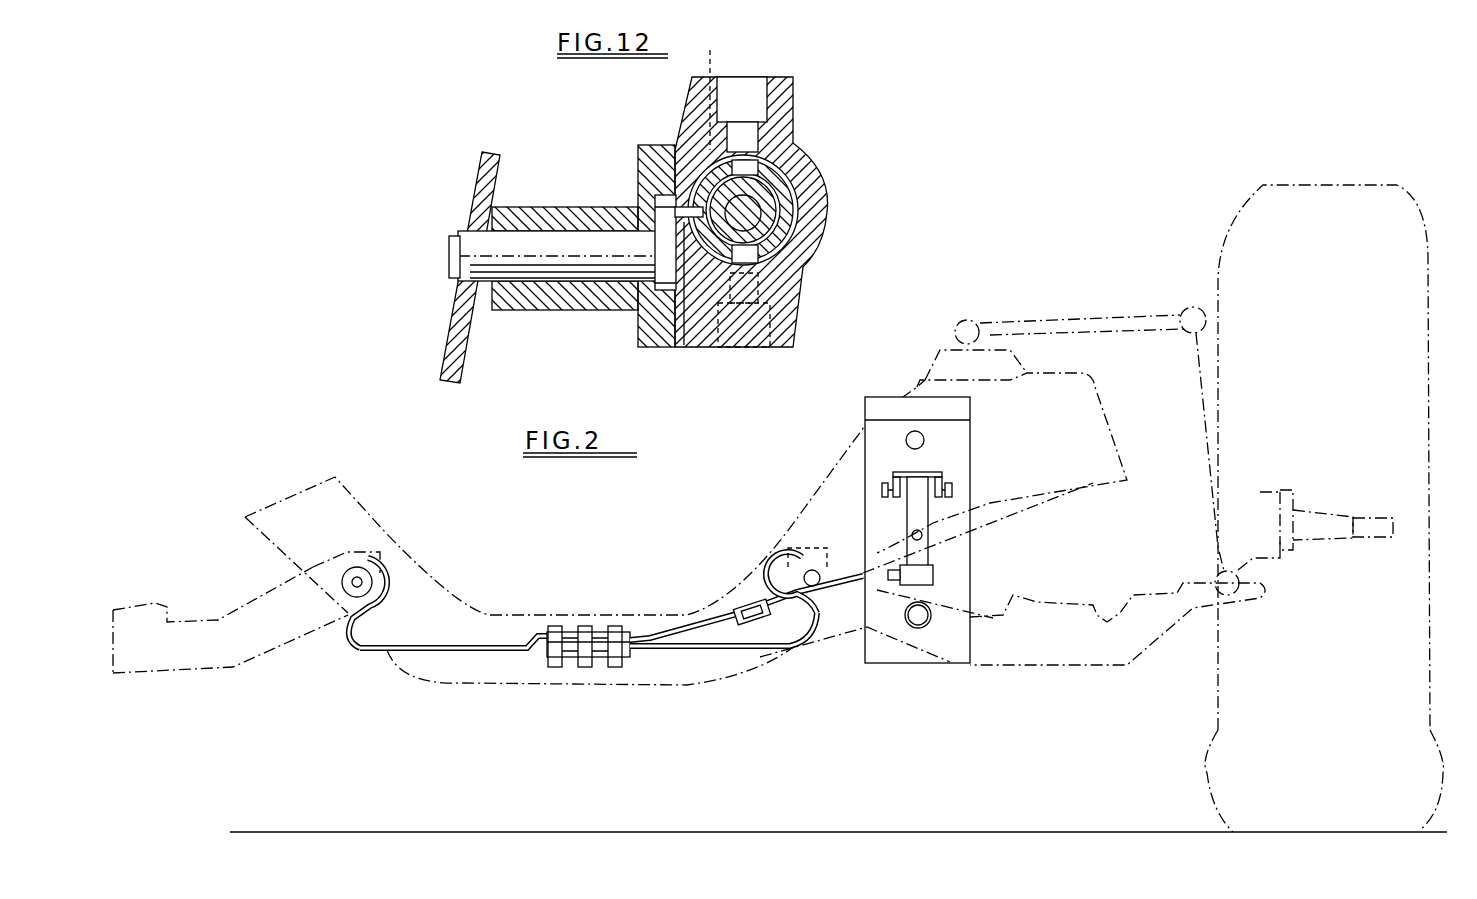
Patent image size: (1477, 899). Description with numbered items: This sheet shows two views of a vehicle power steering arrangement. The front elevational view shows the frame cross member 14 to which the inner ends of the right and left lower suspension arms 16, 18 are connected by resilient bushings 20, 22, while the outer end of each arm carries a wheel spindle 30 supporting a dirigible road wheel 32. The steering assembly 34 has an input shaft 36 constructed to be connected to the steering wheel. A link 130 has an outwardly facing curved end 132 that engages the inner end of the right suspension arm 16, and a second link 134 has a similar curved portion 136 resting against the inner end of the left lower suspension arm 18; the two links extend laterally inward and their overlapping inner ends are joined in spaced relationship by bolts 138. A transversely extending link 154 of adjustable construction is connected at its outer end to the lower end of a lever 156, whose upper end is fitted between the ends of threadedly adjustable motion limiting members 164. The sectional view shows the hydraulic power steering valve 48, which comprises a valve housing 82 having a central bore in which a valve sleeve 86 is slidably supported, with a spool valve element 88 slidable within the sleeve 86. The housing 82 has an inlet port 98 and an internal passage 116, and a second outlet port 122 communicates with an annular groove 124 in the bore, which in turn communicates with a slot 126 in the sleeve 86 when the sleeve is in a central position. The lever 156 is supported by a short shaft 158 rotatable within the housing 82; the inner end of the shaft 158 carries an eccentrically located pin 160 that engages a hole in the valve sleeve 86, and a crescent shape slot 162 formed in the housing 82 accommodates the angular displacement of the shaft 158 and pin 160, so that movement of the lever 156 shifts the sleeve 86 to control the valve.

In FIG. 2, the frame cross member 14 is at (345, 510).
In FIG. 2, the right lower suspension arm 16 is at (270, 646).
In FIG. 2, the left lower suspension arm 18 is at (1092, 682).
In FIG. 2, the resilient bushing 20 is at (333, 577).
In FIG. 2, the resilient bushing 22 is at (837, 552).
In FIG. 2, the wheel spindle 30 is at (1297, 492).
In FIG. 2, the left dirigible road wheel 32 is at (1375, 203).
In FIG. 2, the steering gear assembly 34 is at (980, 559).
In FIG. 2, the input shaft 36 is at (927, 438).
In FIG. 12, the hydraulic power steering valve 48 is at (650, 358).
In FIG. 12, the valve housing 82 is at (643, 160).
In FIG. 12, the valve sleeve 86 is at (797, 193).
In FIG. 12, the spool valve element 88 is at (763, 210).
In FIG. 12, the inlet port 98 is at (757, 348).
In FIG. 12, the internal passage 116 is at (736, 89).
In FIG. 12, the second outlet port 122 is at (763, 78).
In FIG. 12, the annular groove 124 is at (793, 183).
In FIG. 12, the slot 126 is at (747, 170).
In FIG. 2, the link 130 is at (487, 653).
In FIG. 2, the curved end 132 is at (387, 577).
In FIG. 2, the second link 134 is at (747, 643).
In FIG. 12, the curved portion 136 is at (780, 240).
In FIG. 2, the curved portion 136 is at (787, 572).
In FIG. 2, the bolts 138 is at (557, 668).
In FIG. 2, the transversely extending link 154 is at (702, 620).
In FIG. 12, the lever 156 is at (443, 353).
In FIG. 2, the lever 156 is at (938, 572).
In FIG. 12, the short shaft 158 is at (550, 247).
In FIG. 2, the short shaft 158 is at (925, 535).
In FIG. 12, the eccentrically located pin 160 is at (690, 203).
In FIG. 12, the crescent shape slot 162 is at (685, 345).
In FIG. 2, the motion limiting members 164 is at (882, 490).